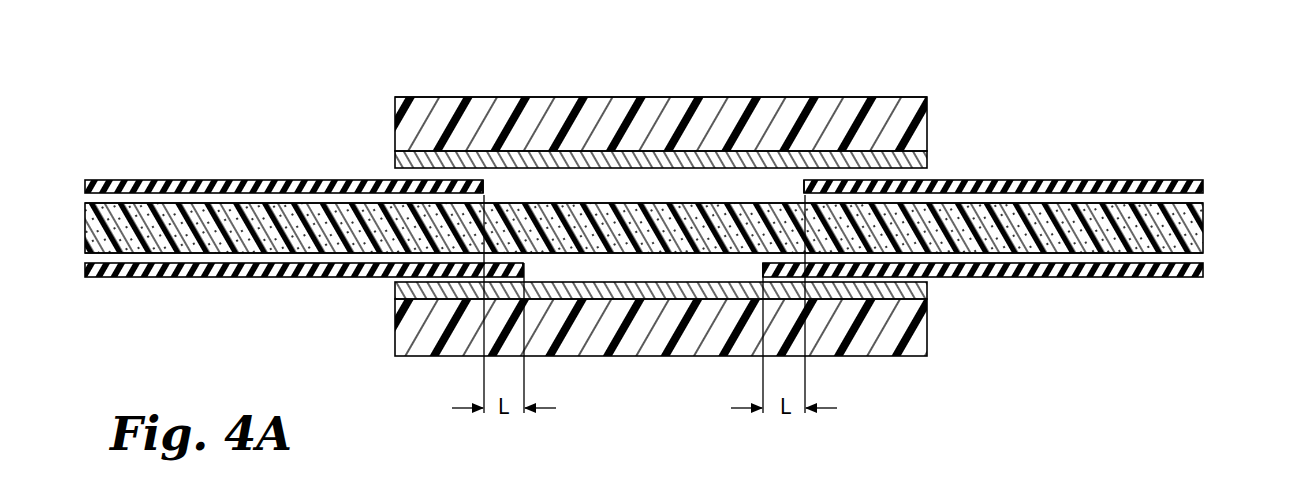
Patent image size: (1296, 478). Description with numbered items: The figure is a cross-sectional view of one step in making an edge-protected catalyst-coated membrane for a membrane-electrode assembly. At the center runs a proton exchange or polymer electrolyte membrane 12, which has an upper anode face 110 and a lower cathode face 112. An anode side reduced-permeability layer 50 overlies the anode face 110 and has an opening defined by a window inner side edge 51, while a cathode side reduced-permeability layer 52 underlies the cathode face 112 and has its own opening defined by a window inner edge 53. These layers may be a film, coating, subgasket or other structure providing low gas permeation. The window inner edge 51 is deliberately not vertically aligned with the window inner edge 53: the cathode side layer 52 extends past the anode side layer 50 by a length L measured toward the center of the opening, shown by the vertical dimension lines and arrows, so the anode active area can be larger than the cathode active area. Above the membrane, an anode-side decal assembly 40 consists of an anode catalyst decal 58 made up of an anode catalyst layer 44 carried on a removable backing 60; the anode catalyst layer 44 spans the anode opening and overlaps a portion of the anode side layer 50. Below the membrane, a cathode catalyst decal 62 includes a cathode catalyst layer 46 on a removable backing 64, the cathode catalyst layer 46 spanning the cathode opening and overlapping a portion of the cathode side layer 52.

The web / laminate 12 is at (1203, 229).
The anode face 110 is at (293, 210).
The cathode face 112 is at (249, 245).
The anode side reduced-permeability layer 50 is at (186, 180).
The window inner side edge 51 is at (484, 186).
The cathode side reduced-permeability layer 52 is at (187, 278).
The window inner edge 53 is at (524, 275).
The upper bonding assembly 40 is at (719, 106).
The anode catalyst decal 58 is at (800, 95).
The removable backing 60 is at (928, 113).
The anode catalyst layer 44 is at (928, 159).
The cathode catalyst decal 62 is at (683, 347).
The cathode catalyst layer 46 is at (394, 287).
The removable backing 64 is at (927, 322).